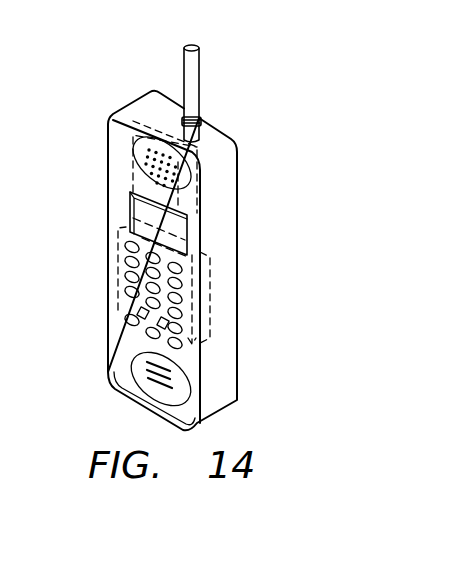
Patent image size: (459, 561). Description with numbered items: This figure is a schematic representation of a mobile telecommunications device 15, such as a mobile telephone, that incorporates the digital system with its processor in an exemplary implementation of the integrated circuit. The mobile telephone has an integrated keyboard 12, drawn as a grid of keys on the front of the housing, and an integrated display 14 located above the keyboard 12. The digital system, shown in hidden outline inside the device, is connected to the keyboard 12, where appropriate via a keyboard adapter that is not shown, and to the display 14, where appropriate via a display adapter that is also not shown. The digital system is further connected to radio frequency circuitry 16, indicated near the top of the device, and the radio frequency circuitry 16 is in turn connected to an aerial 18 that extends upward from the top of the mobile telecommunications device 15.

The keyboard 12 is at (125, 277).
The display 14 is at (133, 213).
The mobile telecommunications device 15 is at (230, 355).
The radio frequency (RF) circuitry 16 is at (133, 184).
The aerial 18 is at (193, 73).